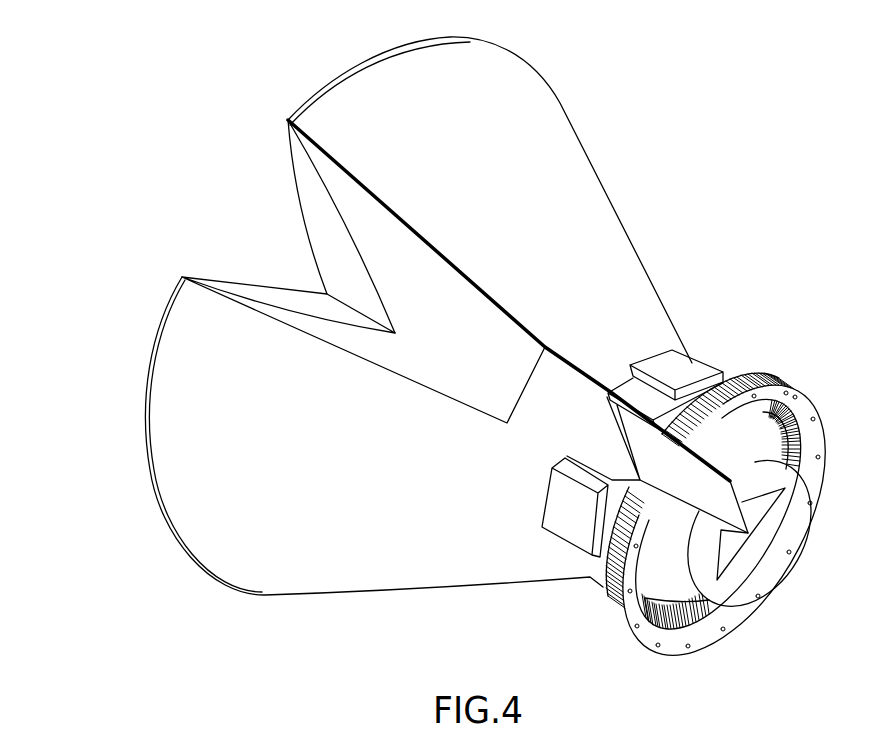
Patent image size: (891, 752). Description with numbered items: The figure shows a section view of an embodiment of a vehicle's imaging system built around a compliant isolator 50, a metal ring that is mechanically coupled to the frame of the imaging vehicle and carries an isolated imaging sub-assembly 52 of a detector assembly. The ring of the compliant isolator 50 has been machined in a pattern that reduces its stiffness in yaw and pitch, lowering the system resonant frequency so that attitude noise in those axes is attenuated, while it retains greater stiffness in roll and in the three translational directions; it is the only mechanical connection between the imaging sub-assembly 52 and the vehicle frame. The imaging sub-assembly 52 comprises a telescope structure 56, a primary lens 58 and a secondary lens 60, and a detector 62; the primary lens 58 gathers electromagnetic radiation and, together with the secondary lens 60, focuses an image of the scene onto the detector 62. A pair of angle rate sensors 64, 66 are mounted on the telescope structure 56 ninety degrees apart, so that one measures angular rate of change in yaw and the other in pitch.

The compliant isolator 50 is at (759, 632).
The imaging sub-assembly 52 is at (121, 547).
The telescope structure 56 is at (330, 123).
The primary lens 58 is at (366, 240).
The secondary lens 60 is at (608, 465).
The detector 62 is at (775, 556).
The angle rate sensor 64 is at (704, 355).
The angle rate sensor 66 is at (553, 545).